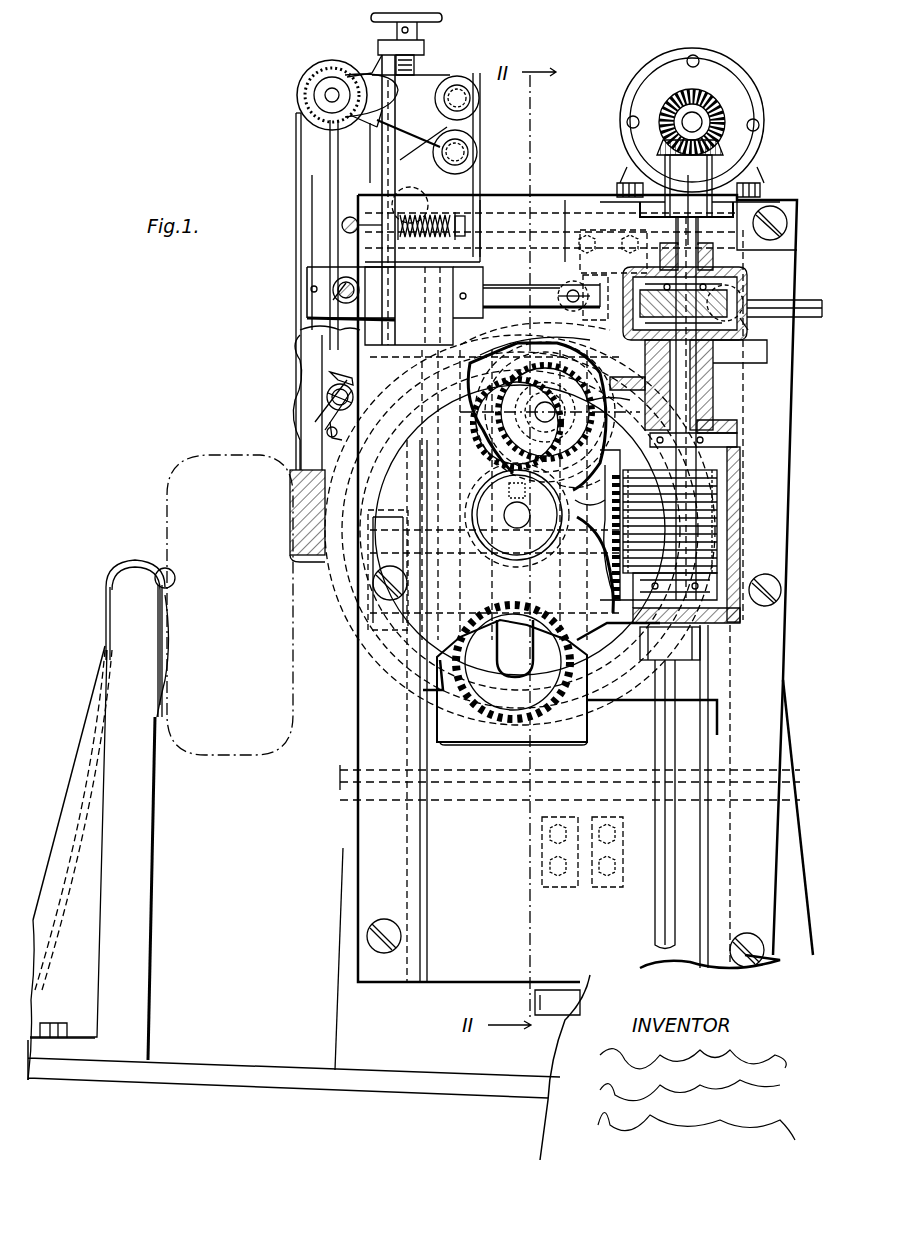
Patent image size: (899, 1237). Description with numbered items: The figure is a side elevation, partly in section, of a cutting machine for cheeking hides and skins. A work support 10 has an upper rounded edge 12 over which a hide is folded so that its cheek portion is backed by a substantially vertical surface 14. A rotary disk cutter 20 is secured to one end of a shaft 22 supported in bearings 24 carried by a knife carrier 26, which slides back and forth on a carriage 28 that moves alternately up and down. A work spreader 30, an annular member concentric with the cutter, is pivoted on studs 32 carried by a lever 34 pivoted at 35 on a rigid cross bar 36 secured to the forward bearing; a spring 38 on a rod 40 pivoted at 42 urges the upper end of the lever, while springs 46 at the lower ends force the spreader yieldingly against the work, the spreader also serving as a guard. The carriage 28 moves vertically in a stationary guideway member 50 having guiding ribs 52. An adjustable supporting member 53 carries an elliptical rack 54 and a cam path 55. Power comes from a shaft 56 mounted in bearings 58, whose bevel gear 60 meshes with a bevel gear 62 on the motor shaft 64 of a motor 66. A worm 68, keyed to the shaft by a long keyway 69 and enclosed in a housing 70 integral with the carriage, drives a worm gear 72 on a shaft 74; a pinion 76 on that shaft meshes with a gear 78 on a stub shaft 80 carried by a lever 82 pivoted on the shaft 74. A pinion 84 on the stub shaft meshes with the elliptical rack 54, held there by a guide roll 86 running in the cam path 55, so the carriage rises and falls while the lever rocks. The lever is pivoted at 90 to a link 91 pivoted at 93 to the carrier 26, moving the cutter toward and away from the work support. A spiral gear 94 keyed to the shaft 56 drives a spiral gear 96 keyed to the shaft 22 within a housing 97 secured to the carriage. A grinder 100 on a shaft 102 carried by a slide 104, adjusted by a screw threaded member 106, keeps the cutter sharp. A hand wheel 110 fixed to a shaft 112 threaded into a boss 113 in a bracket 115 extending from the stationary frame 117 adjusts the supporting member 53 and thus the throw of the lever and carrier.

The work support 10 is at (145, 812).
The upper rounded edge 12 is at (112, 585).
The vertical surface 14 is at (160, 580).
The rotary disk cutter 20 is at (296, 133).
The shaft 22 is at (493, 285).
The bearings 24 is at (592, 262).
The knife slide or carrier 26 is at (522, 252).
The carriage 28 is at (625, 690).
The work spreader 30 is at (308, 529).
The studs 32 is at (345, 250).
The lever 34 is at (342, 353).
The pivot 35 is at (345, 296).
The rigid cross bar 36 is at (340, 283).
The spring 38 is at (440, 215).
The rod 40 is at (460, 225).
The pivot 42 is at (350, 216).
The springs 46 is at (340, 435).
The stationary guideway member 50 is at (450, 982).
The guiding ribs 52 is at (420, 895).
The adjustable supporting member 53 is at (340, 765).
The elliptical rack 54 is at (460, 392).
The cam path 55 is at (533, 688).
The shaft 56 is at (665, 740).
The bearings 58 is at (685, 193).
The bevel gear 60 is at (722, 150).
The bevel gear 62 is at (708, 103).
The motor shaft 64 is at (688, 120).
The motor 66 is at (686, 42).
The worm 68 is at (720, 473).
The keyway 69 is at (668, 728).
The housing 70 is at (738, 505).
The worm gear 72 is at (600, 462).
The shaft 74 is at (513, 520).
The pinion 76 is at (585, 494).
The gear 78 is at (605, 472).
The stub shaft 80 is at (545, 425).
The lever 82 is at (552, 342).
The pinion 84 is at (540, 383).
The guide roll 86 is at (517, 423).
The pivotal connection 90 is at (566, 287).
The link 91 is at (541, 295).
The pivot 93 is at (738, 280).
The spiral gear 94 is at (648, 345).
The spiral gear 96 is at (741, 348).
The housing 97 is at (748, 333).
The grinder 100 is at (320, 72).
The shaft 102 is at (325, 95).
The slide 104 is at (380, 42).
The screw threaded member 106 is at (416, 66).
The hand wheel 110 is at (385, 622).
The shaft 112 is at (517, 526).
The interiorly threaded boss 113 is at (628, 580).
The bracket 115 is at (590, 770).
The stationary frame 117 is at (340, 852).